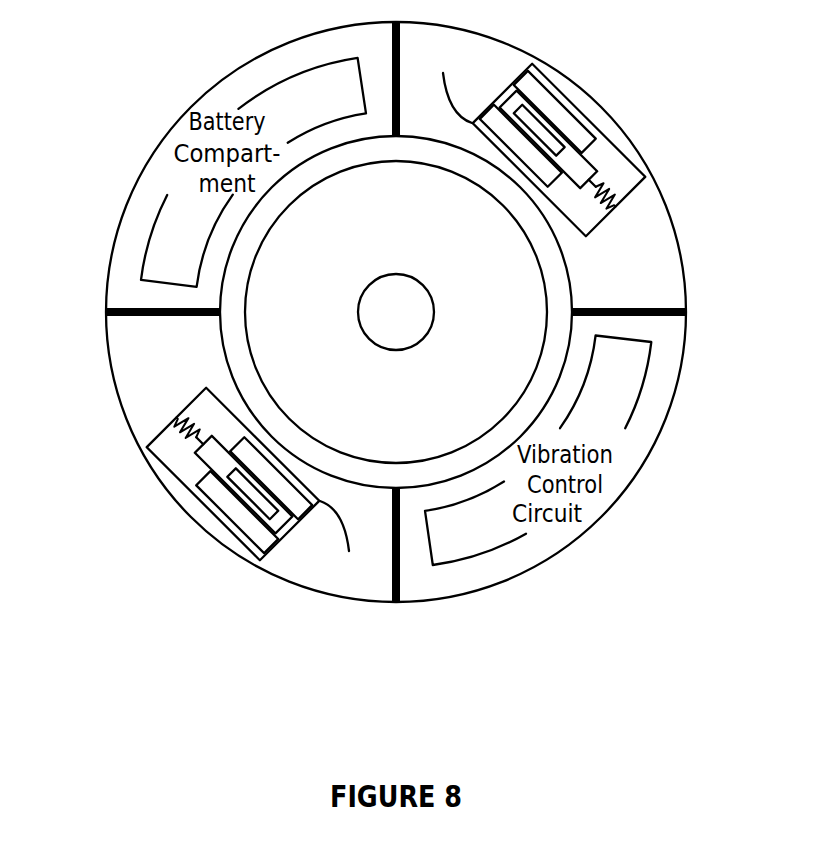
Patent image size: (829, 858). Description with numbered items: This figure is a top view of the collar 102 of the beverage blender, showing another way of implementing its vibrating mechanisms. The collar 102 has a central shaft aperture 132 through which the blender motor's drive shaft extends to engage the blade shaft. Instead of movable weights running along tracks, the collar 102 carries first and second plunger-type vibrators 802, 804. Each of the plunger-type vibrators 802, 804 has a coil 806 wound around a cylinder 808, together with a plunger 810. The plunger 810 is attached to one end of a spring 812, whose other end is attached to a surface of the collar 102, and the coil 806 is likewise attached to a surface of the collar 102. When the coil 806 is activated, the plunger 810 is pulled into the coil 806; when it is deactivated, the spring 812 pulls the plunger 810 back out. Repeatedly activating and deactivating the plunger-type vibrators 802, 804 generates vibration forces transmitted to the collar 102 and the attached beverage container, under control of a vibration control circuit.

The collar 102 is at (650, 535).
The shaft aperture 132 is at (428, 275).
The first plunger-type vibrator 802 is at (592, 115).
The second plunger-type vibrator 804 is at (200, 509).
The coil 806 is at (527, 82).
The cylinder 808 is at (527, 78).
The plunger 810 is at (588, 165).
The spring 812 is at (620, 222).